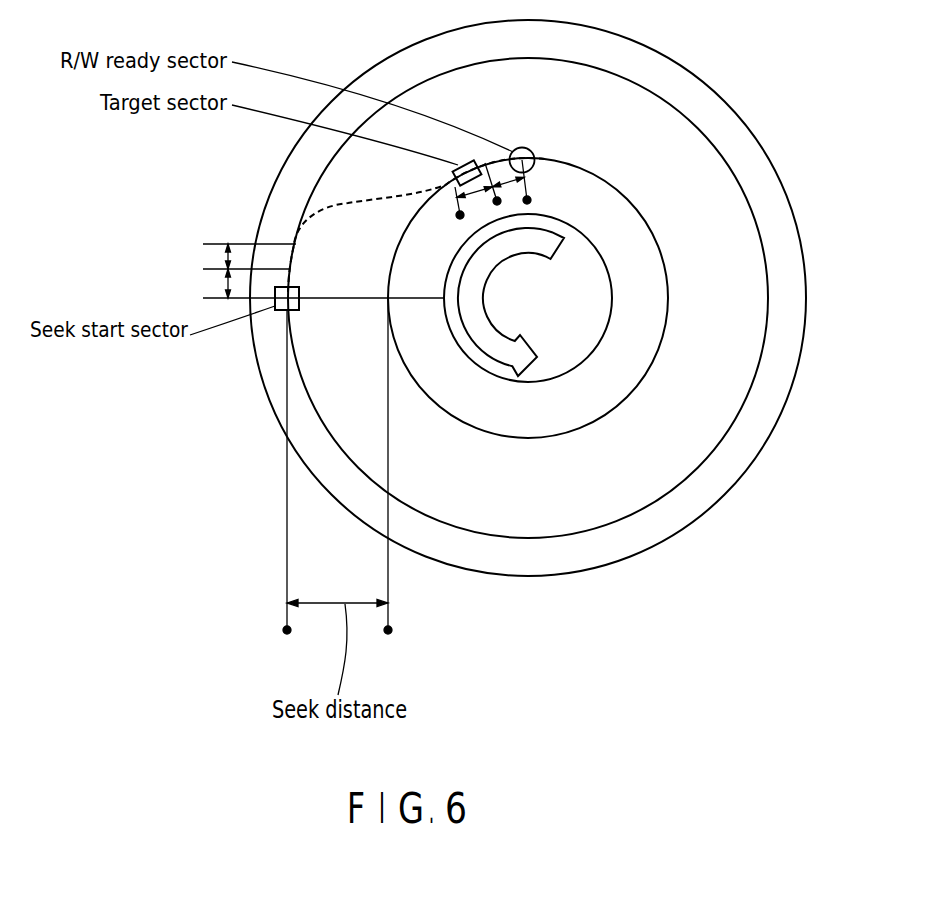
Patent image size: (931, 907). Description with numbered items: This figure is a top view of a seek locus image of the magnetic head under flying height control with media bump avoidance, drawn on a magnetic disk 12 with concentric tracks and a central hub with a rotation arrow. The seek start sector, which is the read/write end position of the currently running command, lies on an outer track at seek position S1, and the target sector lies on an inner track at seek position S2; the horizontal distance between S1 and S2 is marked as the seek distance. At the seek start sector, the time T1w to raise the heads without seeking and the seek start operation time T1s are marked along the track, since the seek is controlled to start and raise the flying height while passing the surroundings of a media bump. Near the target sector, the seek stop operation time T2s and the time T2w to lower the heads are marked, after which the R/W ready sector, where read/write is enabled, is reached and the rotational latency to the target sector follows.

The disk 12 is at (743, 120).
The seek start operation time T1s is at (226, 255).
The time to raise the magnetic heads without seeking T1w is at (228, 284).
The seek stop operation time T2s is at (472, 190).
The time to fall the magnetic heads having reached S2 T2w is at (508, 182).
The seek start position S1 is at (287, 634).
The seek end position S2 is at (388, 634).